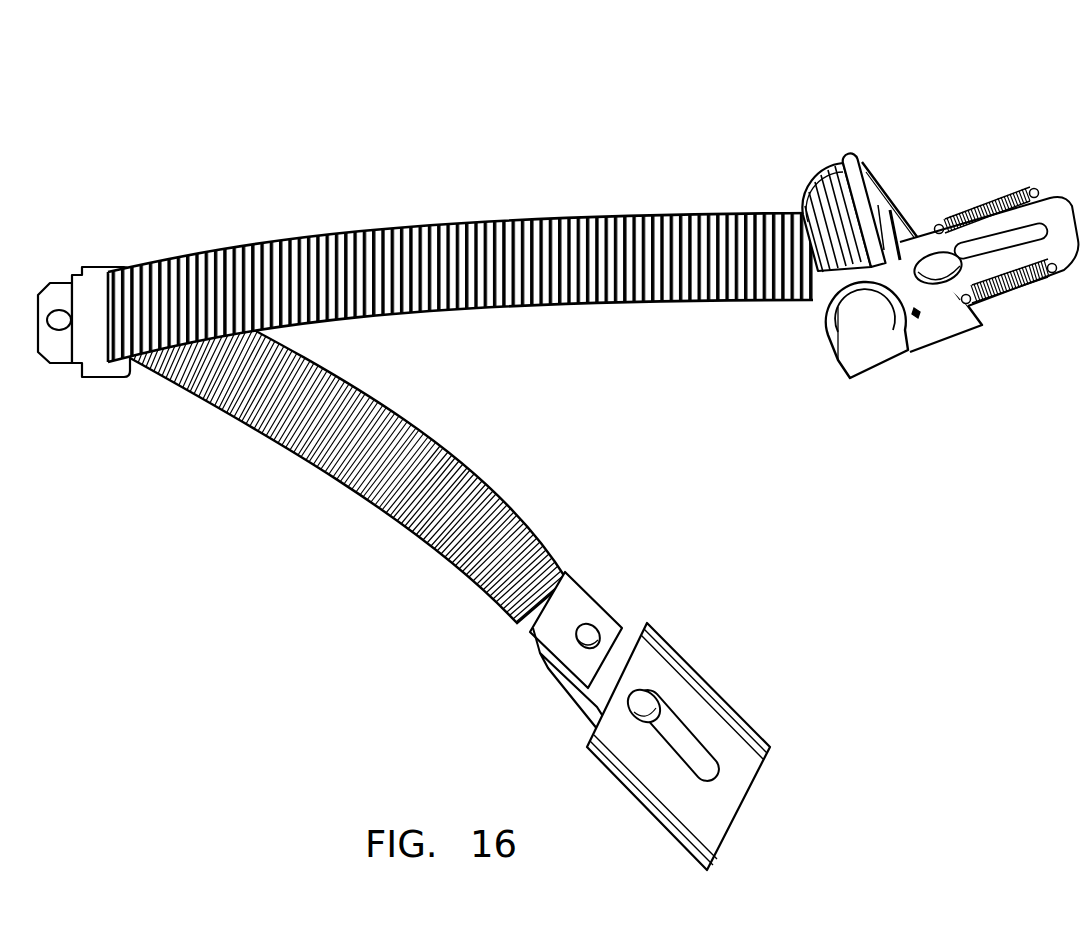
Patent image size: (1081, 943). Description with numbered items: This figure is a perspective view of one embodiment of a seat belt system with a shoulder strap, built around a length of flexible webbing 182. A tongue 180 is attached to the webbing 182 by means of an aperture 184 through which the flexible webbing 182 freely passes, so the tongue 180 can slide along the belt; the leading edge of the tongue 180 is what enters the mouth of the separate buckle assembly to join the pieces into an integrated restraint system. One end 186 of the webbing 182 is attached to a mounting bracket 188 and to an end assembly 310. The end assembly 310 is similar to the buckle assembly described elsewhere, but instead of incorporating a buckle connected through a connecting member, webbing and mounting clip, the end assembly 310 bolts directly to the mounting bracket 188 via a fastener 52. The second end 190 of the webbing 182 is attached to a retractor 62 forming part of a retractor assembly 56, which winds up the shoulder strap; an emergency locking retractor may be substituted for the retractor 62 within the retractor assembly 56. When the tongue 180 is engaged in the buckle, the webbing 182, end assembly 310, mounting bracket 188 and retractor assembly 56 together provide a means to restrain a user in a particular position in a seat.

The fastener 52 is at (596, 630).
The retractor assembly 56 is at (895, 181).
The retractor 62 is at (886, 340).
The tongue 180 is at (103, 268).
The flexible webbing 182 is at (317, 226).
The aperture 184 is at (97, 383).
The one end of the webbing 186 is at (553, 550).
The mounting bracket 188 is at (540, 643).
The second end of the webbing 190 is at (795, 303).
The end assembly 310 is at (713, 687).